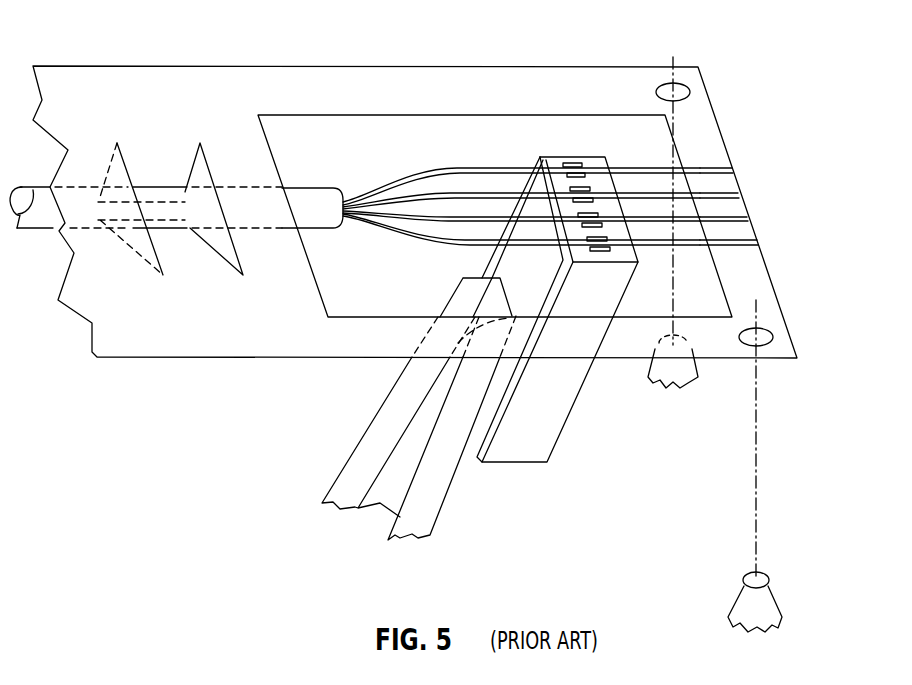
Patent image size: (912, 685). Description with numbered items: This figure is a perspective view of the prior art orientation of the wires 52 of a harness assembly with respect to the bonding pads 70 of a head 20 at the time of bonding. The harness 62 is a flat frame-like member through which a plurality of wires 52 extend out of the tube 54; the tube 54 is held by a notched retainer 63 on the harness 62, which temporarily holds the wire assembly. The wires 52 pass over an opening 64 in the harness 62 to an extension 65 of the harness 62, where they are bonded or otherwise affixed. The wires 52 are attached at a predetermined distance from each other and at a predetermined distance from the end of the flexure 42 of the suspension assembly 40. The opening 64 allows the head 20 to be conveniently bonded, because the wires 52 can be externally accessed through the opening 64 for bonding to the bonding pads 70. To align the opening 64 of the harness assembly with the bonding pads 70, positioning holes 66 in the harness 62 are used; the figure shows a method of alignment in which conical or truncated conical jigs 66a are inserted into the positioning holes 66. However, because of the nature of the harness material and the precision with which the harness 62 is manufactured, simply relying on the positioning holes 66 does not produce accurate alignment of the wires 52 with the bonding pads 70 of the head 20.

The head 20 is at (557, 442).
The suspension assembly 40 is at (335, 473).
The flexure 42 is at (452, 507).
The wires 52 is at (467, 237).
The tube 54 is at (23, 230).
The harness 62 is at (173, 357).
The notched retainer 63 is at (179, 253).
The opening 64 is at (325, 115).
The extension 65 is at (730, 208).
The positioning holes 66 is at (772, 335).
The conical or truncated conical jigs 66a is at (770, 584).
The bonding pads 70 is at (612, 241).